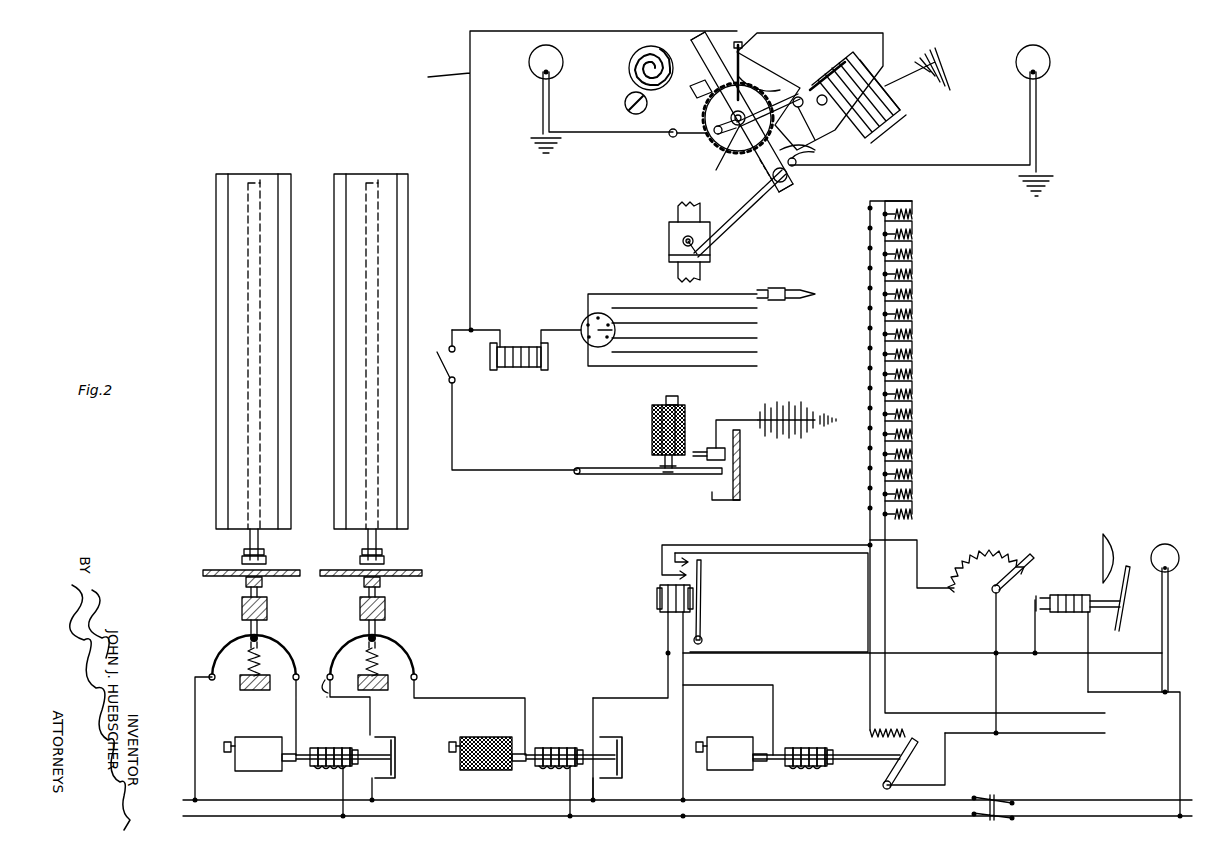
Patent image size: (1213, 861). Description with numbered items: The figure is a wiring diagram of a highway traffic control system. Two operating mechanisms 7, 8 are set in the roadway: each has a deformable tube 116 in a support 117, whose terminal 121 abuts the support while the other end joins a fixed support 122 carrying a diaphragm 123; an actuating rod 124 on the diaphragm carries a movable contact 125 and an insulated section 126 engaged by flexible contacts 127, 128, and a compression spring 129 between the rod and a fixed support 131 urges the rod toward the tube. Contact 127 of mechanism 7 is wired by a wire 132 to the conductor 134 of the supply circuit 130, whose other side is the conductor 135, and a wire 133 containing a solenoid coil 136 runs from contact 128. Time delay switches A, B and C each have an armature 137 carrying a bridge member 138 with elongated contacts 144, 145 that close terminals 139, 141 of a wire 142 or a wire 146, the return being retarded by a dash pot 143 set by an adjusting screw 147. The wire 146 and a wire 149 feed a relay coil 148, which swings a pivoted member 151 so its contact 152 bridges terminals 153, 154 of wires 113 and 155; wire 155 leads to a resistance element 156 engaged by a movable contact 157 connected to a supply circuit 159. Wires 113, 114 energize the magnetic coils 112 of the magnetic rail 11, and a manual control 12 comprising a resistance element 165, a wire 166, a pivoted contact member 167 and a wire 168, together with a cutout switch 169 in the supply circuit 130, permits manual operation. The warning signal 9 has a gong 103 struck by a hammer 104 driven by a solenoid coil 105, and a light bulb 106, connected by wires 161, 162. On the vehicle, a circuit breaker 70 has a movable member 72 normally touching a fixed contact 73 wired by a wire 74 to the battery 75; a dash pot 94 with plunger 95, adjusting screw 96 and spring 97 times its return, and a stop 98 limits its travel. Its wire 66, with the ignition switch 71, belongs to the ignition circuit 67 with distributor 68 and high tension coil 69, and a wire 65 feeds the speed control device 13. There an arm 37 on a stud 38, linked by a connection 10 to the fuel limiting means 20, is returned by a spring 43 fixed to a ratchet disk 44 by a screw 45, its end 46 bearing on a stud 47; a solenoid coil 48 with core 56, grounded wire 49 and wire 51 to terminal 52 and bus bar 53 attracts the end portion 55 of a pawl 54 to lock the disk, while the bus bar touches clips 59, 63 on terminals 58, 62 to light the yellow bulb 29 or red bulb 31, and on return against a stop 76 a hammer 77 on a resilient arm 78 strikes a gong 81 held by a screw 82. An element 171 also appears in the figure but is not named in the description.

The operating mechanism 7 is at (244, 164).
The operating mechanism 8 is at (370, 164).
The warning signal 9 is at (1153, 559).
The connection 10 is at (754, 206).
The magnetic rail 11 is at (927, 333).
The manual control 12 is at (956, 562).
The speed control device 13 is at (610, 156).
The fuel limiting means 20 is at (668, 243).
The yellow light bulb 29 is at (529, 62).
The red light bulb 31 is at (1051, 60).
The arm 37 is at (703, 104).
The fixed shaft or stud 38 is at (738, 118).
The spring 43 is at (736, 138).
The ratchet disk 44 is at (748, 152).
The screw 45 is at (716, 135).
The spring end 46 is at (790, 92).
The stud 47 is at (810, 114).
The solenoid coil 48 is at (892, 82).
The wire 49 is at (913, 88).
The wire 51 is at (880, 44).
The terminal screw 52 is at (744, 50).
The bus bar 53 is at (768, 78).
The pawl 54 is at (816, 143).
The end portion 55 is at (842, 68).
The core 56 is at (758, 78).
The terminal screw 58 is at (670, 137).
The spring contact clip 59 is at (690, 138).
The terminal 62 is at (790, 181).
The spring contact clip 63 is at (800, 163).
The wire 65 is at (581, 180).
The wire 66 is at (493, 328).
The ignition circuit 67 is at (617, 269).
The distributor 68 is at (585, 324).
The high tension coil 69 is at (534, 369).
The circuit breaker 70 is at (640, 444).
The ignition switch 71 is at (445, 364).
The movable member 72 is at (648, 476).
The fixed contact 73 is at (742, 466).
The wire 74 is at (730, 418).
The battery 75 is at (790, 404).
The stop 76 is at (694, 90).
The hammer 77 is at (734, 43).
The resilient arm 78 is at (736, 52).
The gong 81 is at (628, 68).
The screw 82 is at (625, 104).
The dash pot 94 is at (660, 405).
The plunger 95 is at (652, 418).
The adjusting screw 96 is at (677, 398).
The spring 97 is at (652, 435).
The stop 98 is at (712, 498).
The gong 103 is at (1102, 556).
The hammer 104 is at (1122, 600).
The solenoid coil 105 is at (1070, 595).
The light bulb 106 is at (1178, 558).
The magnetic coils 112 is at (912, 241).
The wire 113 is at (868, 466).
The wire 114 is at (888, 640).
The deformable tube 116 is at (248, 232).
The support 117 is at (216, 287).
The terminal 121 is at (262, 180).
The fixed support 122 is at (208, 569).
The diaphragm 123 is at (245, 583).
The actuating rod 124 is at (268, 608).
The movable contact 125 is at (259, 630).
The insulated section 126 is at (249, 638).
The flexible contact 127 is at (212, 660).
The flexible contact 128 is at (288, 660).
The compression spring 129 is at (242, 676).
The supply circuit 130 is at (851, 788).
The fixed support 131 is at (256, 691).
The wire 132 is at (195, 724).
The wire 133 is at (298, 702).
The conductor 134 is at (193, 798).
The conductor 135 is at (186, 816).
The solenoid coil 136 is at (325, 748).
The movable armature 137 is at (346, 748).
The bridge member 138 is at (396, 754).
The terminal 139 is at (381, 733).
The terminal 141 is at (372, 781).
The wire 142 is at (324, 679).
The dash pot 143 is at (261, 779).
The elongated contact 144 is at (396, 737).
The elongated contact 145 is at (396, 777).
The wire 146 is at (665, 698).
The adjusting screw 147 is at (227, 741).
The relay coil 148 is at (659, 597).
The wire 149 is at (685, 722).
The pivoted member 151 is at (702, 631).
The contact 152 is at (705, 590).
The terminal 153 is at (660, 577).
The terminal 154 is at (660, 562).
The wire 155 is at (780, 553).
The resistance element 156 is at (869, 729).
The movable contact 157 is at (910, 741).
The supply circuit 159 is at (1048, 743).
The wire 161 is at (949, 652).
The wire 162 is at (1088, 689).
The resistance element 165 is at (1008, 560).
The wire 166 is at (953, 584).
The pivoted contact member 167 is at (1020, 580).
The wire 168 is at (997, 618).
The cutout switch 169 is at (996, 796).
The contact 171 is at (975, 590).